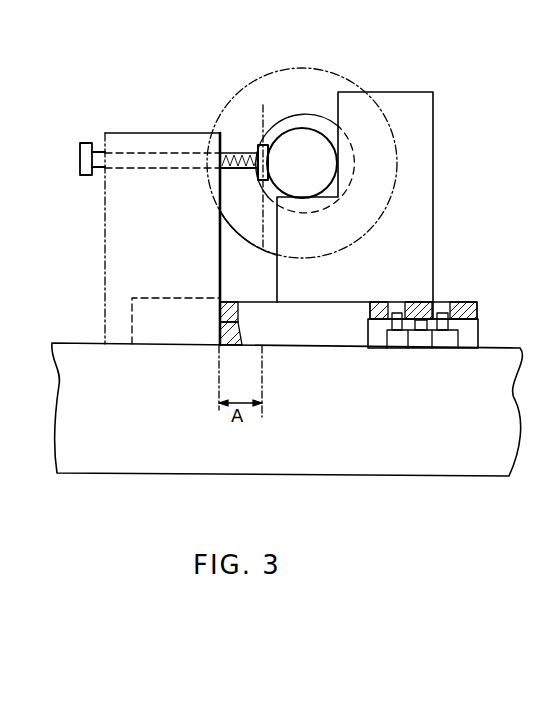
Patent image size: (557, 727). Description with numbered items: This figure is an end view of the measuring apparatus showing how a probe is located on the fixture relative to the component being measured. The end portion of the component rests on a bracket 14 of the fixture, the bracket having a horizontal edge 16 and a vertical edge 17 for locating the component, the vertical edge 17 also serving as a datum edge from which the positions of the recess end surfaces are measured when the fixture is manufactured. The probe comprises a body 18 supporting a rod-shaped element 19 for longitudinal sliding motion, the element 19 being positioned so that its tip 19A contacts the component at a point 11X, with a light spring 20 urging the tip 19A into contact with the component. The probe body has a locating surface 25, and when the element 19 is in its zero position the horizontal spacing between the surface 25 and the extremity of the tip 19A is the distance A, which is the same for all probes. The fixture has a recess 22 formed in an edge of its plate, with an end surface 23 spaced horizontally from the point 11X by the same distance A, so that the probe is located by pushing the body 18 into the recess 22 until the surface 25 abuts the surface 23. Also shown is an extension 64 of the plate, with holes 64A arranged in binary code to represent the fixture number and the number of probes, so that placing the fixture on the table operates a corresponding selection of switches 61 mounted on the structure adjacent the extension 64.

The bracket 14 is at (433, 140).
The horizontal edge 16 is at (322, 200).
The vertical edge 17 is at (337, 108).
The body 18 is at (118, 220).
The rod-shaped element 19 is at (224, 124).
The tip 19A is at (258, 145).
The point 11X is at (268, 150).
The light spring 20 is at (220, 204).
The recess 22 is at (165, 312).
The end surface 23 is at (242, 322).
The locating surface 25 is at (221, 294).
The switches 61 is at (393, 343).
The extension 64 is at (478, 309).
The holes 64A is at (438, 308).